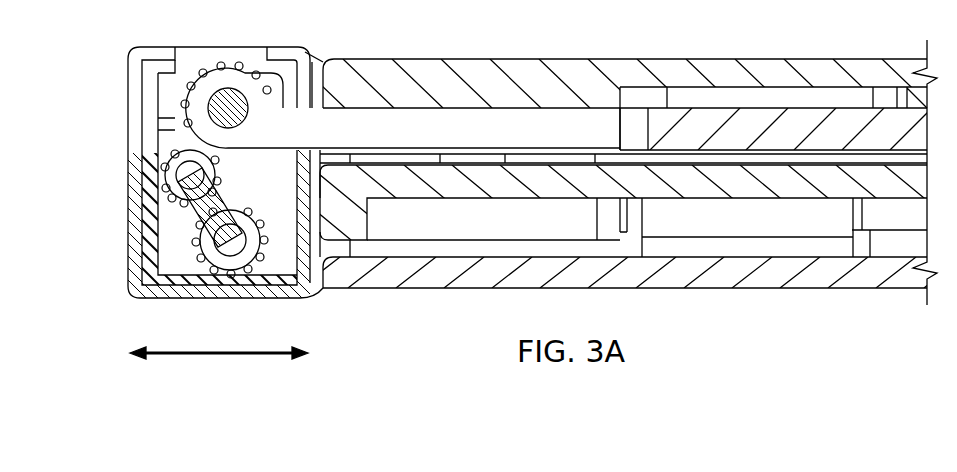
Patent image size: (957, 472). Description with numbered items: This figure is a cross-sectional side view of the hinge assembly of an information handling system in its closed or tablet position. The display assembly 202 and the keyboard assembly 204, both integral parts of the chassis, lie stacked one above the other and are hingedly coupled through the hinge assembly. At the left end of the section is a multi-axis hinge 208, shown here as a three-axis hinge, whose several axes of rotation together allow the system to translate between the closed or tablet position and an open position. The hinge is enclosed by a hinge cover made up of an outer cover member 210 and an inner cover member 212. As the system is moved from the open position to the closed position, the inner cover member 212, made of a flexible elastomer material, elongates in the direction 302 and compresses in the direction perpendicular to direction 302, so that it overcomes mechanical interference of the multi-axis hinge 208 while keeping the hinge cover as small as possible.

The display assembly 202 is at (567, 58).
The keyboard assembly 204 is at (735, 290).
The multi-axis hinge 208 is at (128, 230).
The outer cover member 210 is at (128, 62).
The inner cover member 212 is at (217, 300).
The direction 302 is at (217, 355).